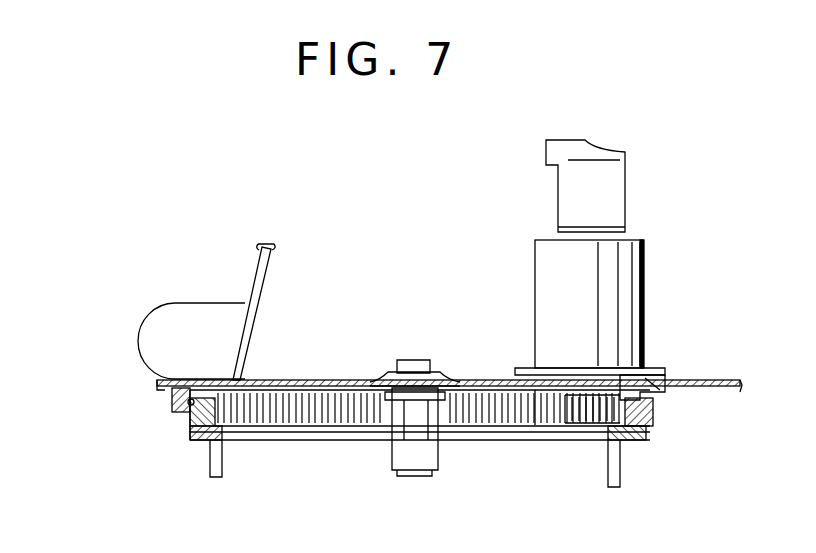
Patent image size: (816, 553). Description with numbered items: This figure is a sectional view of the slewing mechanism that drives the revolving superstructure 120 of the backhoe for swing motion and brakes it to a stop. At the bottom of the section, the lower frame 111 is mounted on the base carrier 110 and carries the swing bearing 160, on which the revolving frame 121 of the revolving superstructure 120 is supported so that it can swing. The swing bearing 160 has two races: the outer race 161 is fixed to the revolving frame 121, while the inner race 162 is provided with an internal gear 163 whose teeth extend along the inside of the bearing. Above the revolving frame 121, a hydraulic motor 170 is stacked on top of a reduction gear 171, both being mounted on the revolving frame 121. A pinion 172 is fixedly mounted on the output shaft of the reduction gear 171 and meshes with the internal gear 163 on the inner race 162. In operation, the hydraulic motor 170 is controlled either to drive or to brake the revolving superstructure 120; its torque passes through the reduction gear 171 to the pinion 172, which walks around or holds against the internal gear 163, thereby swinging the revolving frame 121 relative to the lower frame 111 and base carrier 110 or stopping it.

The base carrier 110 is at (636, 458).
The lower frame 111 is at (646, 438).
The revolving superstructure 120 is at (680, 362).
The revolving frame 121 is at (712, 383).
The swing bearing 160 is at (655, 408).
The outer race 161 is at (175, 400).
The inner race 162 is at (197, 430).
The internal gear 163 is at (290, 420).
The hydraulic motor 170 is at (618, 187).
The reduction gear 171 is at (640, 274).
The pinion 172 is at (578, 422).